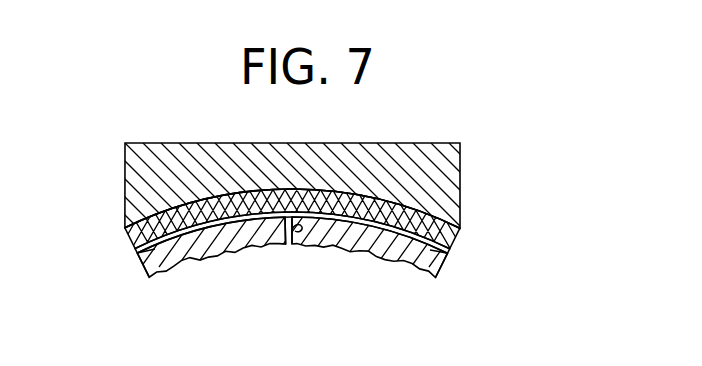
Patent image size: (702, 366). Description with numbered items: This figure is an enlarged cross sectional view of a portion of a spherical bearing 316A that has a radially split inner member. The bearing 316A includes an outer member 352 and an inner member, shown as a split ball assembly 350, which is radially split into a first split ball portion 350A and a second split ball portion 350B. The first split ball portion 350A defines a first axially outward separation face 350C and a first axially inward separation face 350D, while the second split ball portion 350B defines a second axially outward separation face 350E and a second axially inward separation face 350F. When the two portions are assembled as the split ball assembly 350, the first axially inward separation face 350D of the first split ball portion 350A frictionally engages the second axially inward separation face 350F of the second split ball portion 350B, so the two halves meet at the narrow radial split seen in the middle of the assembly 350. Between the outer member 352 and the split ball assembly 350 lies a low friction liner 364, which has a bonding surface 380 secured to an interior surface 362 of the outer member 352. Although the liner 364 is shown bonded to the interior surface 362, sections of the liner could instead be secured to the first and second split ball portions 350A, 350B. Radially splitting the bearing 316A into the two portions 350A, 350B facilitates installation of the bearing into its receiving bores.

The spherical bearing 316A is at (457, 128).
The outer member 352 is at (450, 178).
The interior surface 362 is at (352, 197).
The bonding surface 380 is at (461, 214).
The low friction liner 364 is at (454, 242).
The split ball assembly 350 is at (243, 260).
The first split ball portion 350A is at (431, 265).
The second split ball portion 350B is at (160, 273).
The first axially outward separation face 350C is at (441, 262).
The first axially inward separation face 350D is at (303, 234).
The second axially outward separation face 350E is at (148, 268).
The second axially inward separation face 350F is at (288, 246).